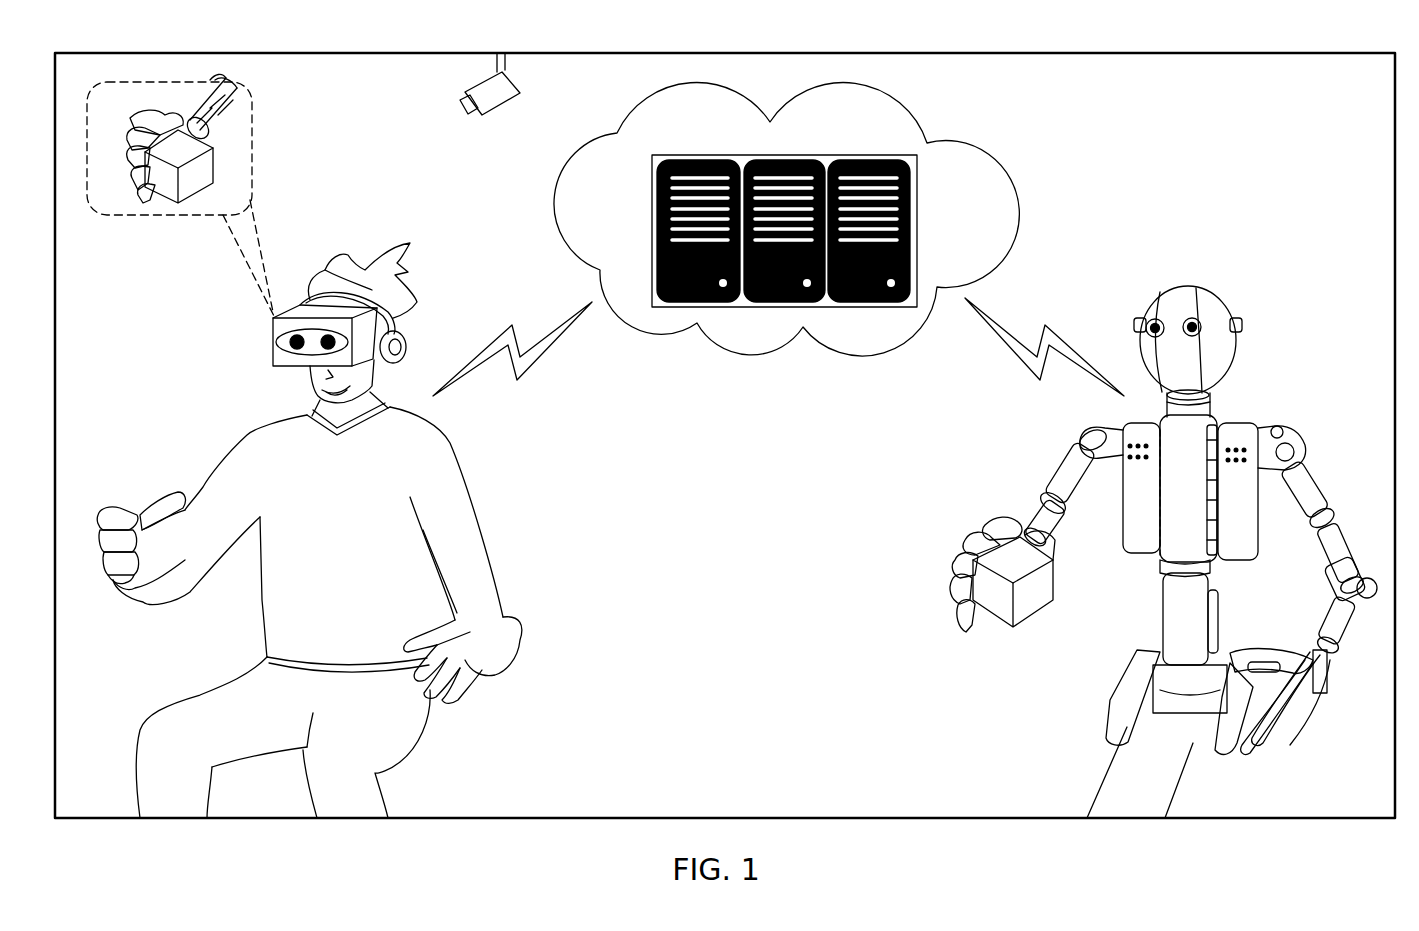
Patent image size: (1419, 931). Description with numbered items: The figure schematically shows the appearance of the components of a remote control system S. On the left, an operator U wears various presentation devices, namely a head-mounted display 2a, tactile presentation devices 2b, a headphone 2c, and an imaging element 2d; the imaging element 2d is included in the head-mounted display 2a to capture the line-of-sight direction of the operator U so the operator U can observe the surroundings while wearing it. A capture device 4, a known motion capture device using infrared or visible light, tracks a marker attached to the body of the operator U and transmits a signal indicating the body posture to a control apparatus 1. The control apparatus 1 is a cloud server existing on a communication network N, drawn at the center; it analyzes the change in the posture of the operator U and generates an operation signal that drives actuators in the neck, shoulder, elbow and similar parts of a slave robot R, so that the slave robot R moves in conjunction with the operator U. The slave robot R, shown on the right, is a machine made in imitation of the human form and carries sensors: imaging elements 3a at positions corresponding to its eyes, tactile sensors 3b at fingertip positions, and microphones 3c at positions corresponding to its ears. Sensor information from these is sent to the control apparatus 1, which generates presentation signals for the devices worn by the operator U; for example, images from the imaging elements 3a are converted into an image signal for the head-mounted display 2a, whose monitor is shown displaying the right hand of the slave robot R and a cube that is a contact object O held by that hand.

The remote control system S is at (1370, 53).
The communication network N is at (957, 140).
The control apparatus 1 is at (877, 153).
The capture device 4 is at (492, 115).
The operator U is at (388, 268).
The slave robot R is at (1188, 287).
The contact object O is at (213, 188).
The head-mounted display 2a is at (338, 352).
The tactile presentation devices 2b is at (173, 492).
The headphone 2c is at (407, 345).
The imaging element 2d is at (273, 343).
The imaging elements 3a is at (1148, 318).
The tactile sensors 3b is at (1012, 525).
The microphones 3c is at (1133, 325).